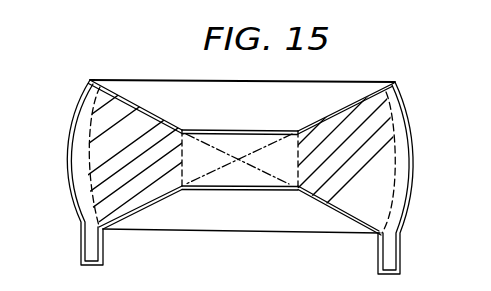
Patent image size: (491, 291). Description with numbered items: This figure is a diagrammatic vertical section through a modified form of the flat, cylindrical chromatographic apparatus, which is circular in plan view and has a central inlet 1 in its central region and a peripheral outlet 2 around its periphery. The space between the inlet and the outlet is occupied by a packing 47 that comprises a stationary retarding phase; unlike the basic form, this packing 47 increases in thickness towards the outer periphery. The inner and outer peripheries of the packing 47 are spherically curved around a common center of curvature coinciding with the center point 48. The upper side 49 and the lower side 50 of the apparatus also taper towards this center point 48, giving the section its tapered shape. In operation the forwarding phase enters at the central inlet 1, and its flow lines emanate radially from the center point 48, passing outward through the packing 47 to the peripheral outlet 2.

The central inlet 1 is at (213, 178).
The peripheral outlet 2 is at (71, 162).
The packing 47 is at (115, 188).
The center point 48 is at (243, 160).
The upper side 49 is at (129, 101).
The lower side 50 is at (328, 207).